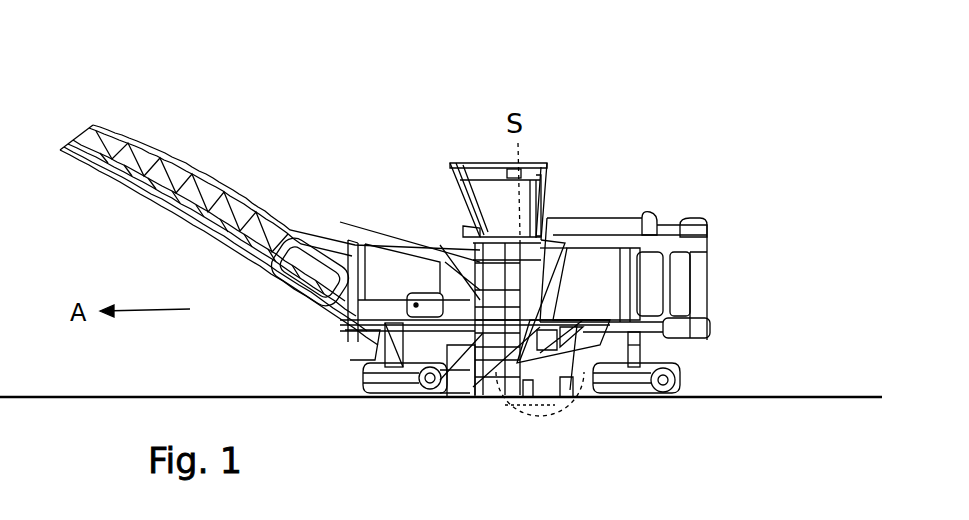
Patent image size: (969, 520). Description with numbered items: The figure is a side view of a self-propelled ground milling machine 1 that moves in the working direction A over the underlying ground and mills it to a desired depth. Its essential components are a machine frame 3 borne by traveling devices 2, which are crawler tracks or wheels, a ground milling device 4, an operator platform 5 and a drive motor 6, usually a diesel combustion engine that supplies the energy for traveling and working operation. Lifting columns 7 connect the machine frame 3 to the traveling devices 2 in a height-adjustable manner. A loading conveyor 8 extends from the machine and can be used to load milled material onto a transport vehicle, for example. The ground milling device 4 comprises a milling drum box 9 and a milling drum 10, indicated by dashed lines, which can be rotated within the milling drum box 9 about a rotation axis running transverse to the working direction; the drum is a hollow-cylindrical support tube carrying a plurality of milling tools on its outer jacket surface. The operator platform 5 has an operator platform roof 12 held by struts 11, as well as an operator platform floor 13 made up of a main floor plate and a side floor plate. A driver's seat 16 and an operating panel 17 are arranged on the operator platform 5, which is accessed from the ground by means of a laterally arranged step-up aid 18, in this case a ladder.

The ground milling machine 1 is at (550, 96).
The traveling devices 2 is at (400, 400).
The machine frame 3 is at (673, 298).
The ground milling device 4 is at (575, 400).
The operator platform 5 is at (500, 196).
The drive motor 6 is at (590, 270).
The lifting columns 7 is at (380, 343).
The loading conveyor 8 is at (182, 163).
The milling drum box 9 is at (473, 398).
The milling drum 10 is at (532, 410).
The struts 11 is at (545, 165).
The operator platform roof 12 is at (452, 164).
The operator platform floor 13 is at (372, 230).
The driver's seat 16 is at (548, 222).
The operating panel 17 is at (473, 240).
The step-up aid 18 is at (420, 400).